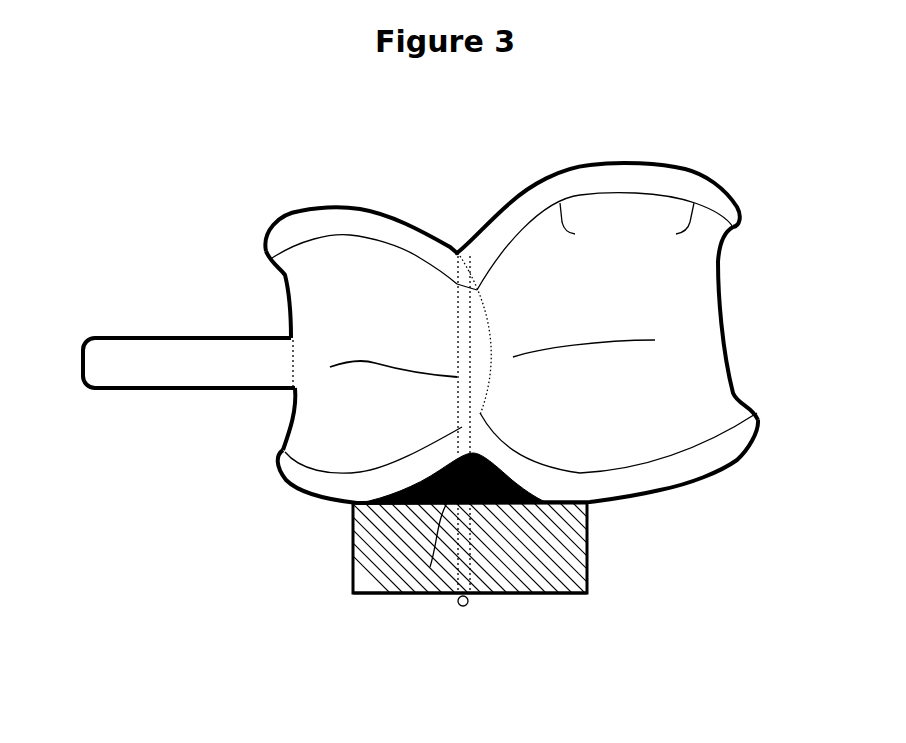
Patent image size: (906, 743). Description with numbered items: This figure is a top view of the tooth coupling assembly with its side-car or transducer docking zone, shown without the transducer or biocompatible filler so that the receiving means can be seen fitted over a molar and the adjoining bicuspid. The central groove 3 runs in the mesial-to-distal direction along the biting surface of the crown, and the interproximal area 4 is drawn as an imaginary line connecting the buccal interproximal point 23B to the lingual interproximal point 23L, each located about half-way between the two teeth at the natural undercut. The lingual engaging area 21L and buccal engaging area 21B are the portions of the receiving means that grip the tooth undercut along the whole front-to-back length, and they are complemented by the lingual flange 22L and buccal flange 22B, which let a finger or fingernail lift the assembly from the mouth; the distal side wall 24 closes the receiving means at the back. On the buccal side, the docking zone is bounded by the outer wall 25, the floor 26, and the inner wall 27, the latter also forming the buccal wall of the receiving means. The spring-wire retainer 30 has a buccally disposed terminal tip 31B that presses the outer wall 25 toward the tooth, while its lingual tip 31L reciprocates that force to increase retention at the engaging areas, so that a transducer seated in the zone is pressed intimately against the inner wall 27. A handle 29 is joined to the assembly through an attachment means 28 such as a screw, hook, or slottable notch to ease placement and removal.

The lingual flange 22L is at (292, 233).
The buccal flange 22B is at (667, 472).
The distal side wall 24 is at (670, 287).
The lingual engaging area 21L is at (390, 254).
The buccal engaging area 21B is at (445, 432).
The lingual interproximal point 23L is at (477, 290).
The buccal interproximal point 23B is at (481, 414).
The lingual tip of spring-wire retainer 31L is at (457, 254).
The buccally disposed terminal tip of spring-wire retainer 31B is at (460, 608).
The spring-wire retainer 30 is at (456, 305).
The interproximal area 4 is at (494, 333).
The central groove 3 is at (370, 361).
The attachment means 28 is at (290, 335).
The handle 29 is at (175, 370).
The floor 26 is at (369, 554).
The inner wall 27 is at (430, 567).
The outer wall 25 is at (546, 597).